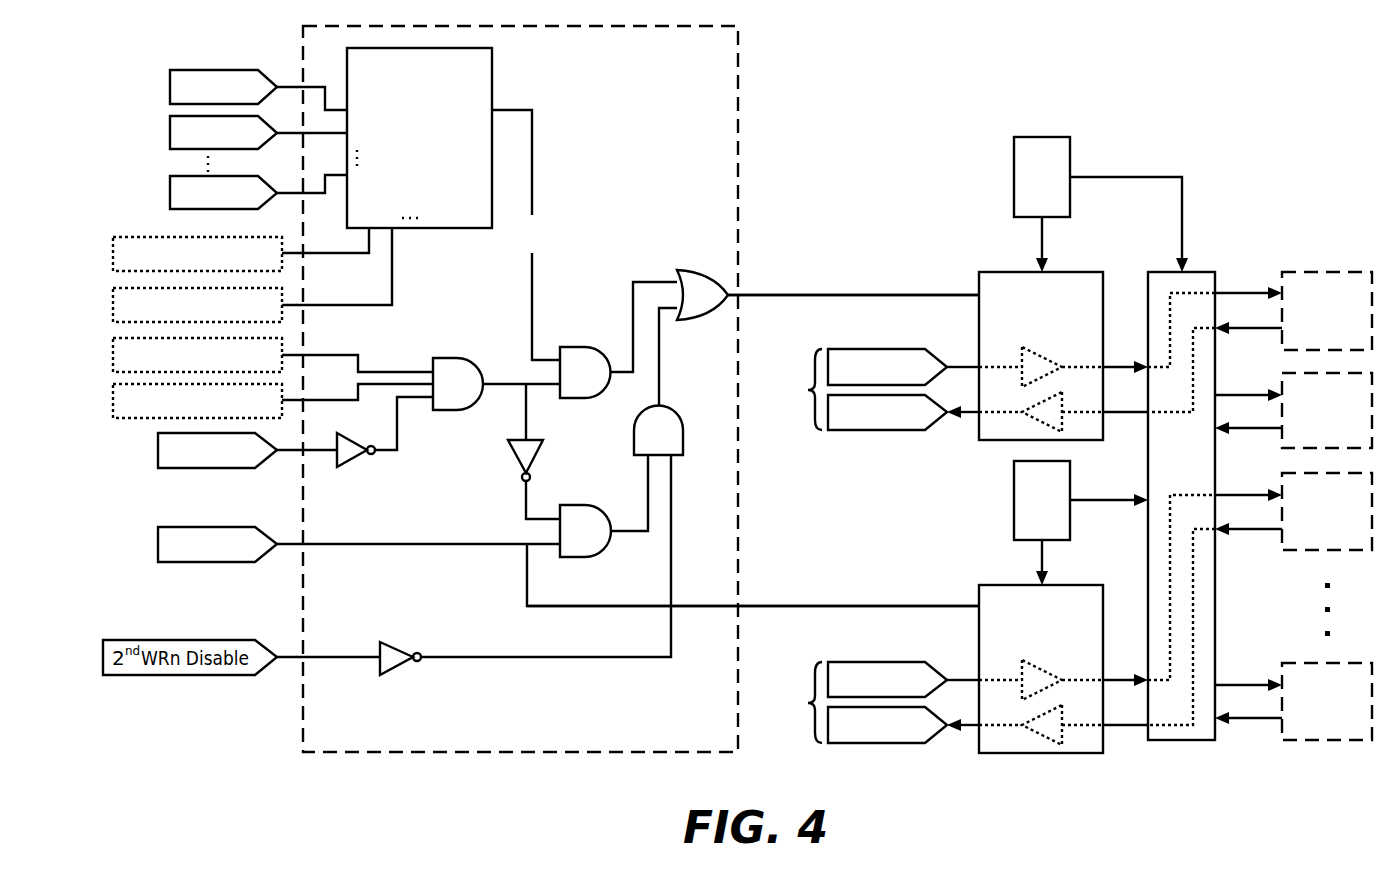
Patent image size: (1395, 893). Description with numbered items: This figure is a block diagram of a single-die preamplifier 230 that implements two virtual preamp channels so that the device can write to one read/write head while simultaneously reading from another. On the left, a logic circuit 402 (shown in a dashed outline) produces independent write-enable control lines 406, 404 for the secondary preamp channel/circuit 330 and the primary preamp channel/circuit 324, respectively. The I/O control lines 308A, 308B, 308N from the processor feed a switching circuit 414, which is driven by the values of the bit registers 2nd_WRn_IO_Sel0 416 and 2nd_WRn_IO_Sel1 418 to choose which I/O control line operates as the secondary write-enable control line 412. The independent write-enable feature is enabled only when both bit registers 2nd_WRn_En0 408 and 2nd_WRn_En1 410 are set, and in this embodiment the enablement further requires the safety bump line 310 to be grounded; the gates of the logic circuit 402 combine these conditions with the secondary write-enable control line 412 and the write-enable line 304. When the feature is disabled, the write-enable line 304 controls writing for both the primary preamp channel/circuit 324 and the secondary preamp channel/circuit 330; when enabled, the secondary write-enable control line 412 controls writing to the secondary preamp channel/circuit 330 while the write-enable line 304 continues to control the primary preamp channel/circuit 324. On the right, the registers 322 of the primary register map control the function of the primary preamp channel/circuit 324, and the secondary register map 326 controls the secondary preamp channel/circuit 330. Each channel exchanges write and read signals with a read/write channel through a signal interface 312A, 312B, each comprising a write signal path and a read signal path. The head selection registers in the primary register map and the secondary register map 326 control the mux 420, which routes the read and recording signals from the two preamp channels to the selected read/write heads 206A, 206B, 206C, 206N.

The preamplifier 230 is at (1232, 82).
The I/O control line 308A is at (168, 88).
The I/O control line 308B is at (168, 134).
The I/O control line 308N is at (168, 194).
The switching circuit 414 is at (419, 139).
The secondary write-enable control line 412 is at (532, 207).
The 2nd_WRn_IO_Sel0 bit register 416 is at (120, 254).
The 2nd_WRn_IO_Sel1 bit register 418 is at (120, 306).
The 2nd_WRn_En0 bit register 408 is at (120, 356).
The 2nd_WRn_En1 bit register 410 is at (120, 402).
The safety bump line 310 is at (157, 451).
The write-enable line 304 is at (157, 545).
The logic circuit 402 is at (520, 389).
The secondary register map 326 is at (1101, 204).
The registers 322 is at (1081, 523).
The secondary preamp channel/circuit 330 is at (1041, 356).
The primary preamp channel/circuit 324 is at (1041, 669).
The write enable control line 406 is at (1050, 297).
The write enable control line 404 is at (1050, 608).
The signal interface 312B is at (952, 389).
The signal interface 312A is at (952, 702).
The mux 420 is at (1181, 506).
The read/write head 206A is at (1293, 311).
The read/write head 206B is at (1293, 410).
The read/write head 206C is at (1293, 511).
The read/write head 206N is at (1293, 701).